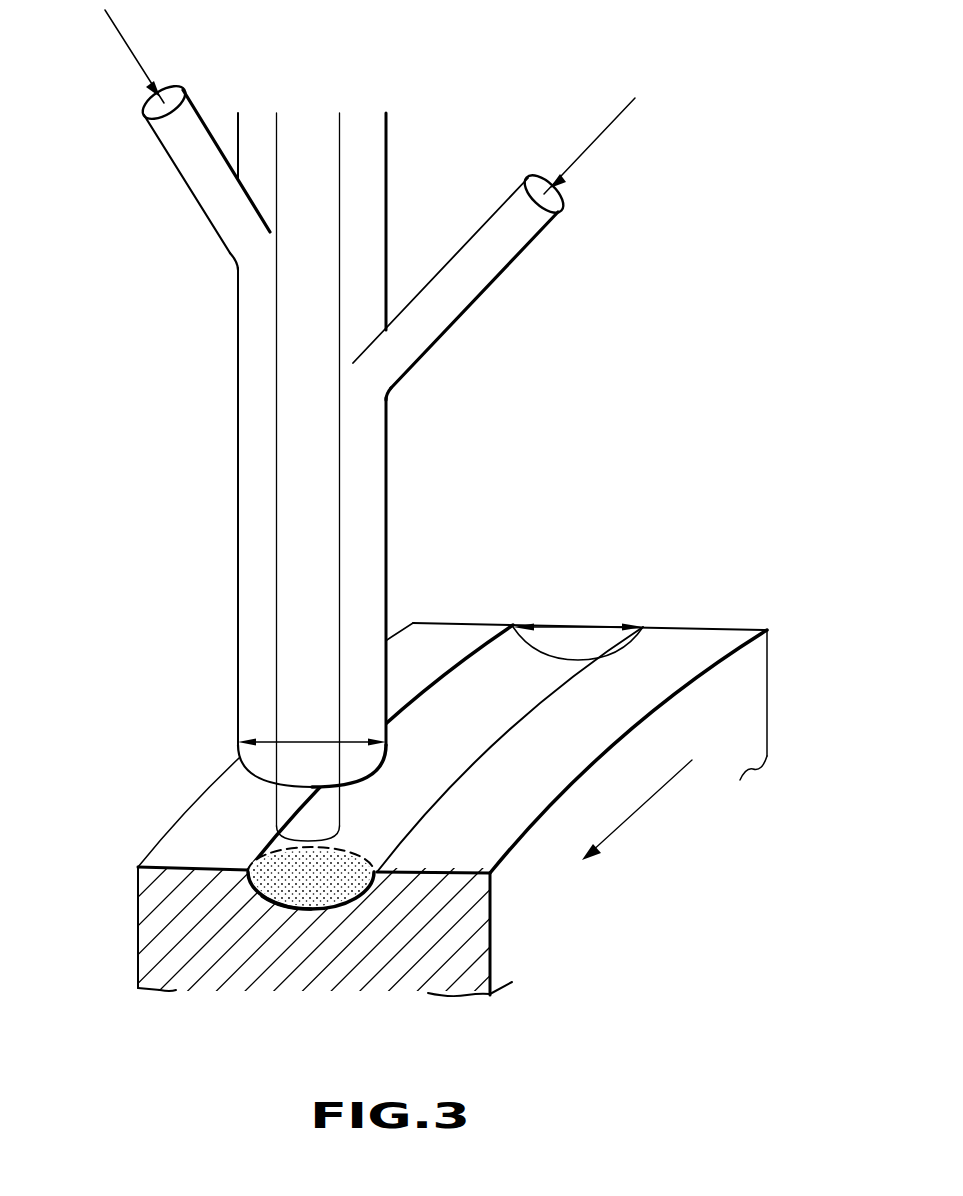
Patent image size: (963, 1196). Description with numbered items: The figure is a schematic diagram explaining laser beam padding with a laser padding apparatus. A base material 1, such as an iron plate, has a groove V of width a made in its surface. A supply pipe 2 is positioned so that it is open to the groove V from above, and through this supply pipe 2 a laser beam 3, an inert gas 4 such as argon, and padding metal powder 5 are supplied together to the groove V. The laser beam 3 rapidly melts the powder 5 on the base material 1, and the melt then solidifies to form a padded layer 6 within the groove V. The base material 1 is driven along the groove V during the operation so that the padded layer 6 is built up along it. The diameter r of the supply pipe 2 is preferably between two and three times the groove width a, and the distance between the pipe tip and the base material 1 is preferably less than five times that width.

The base material 1 is at (178, 820).
The supply pipe 2 is at (238, 520).
The laser beam 3 is at (342, 538).
The inert gas 4 is at (125, 50).
The padding metal powder 5 is at (597, 140).
The padded layer 6 is at (348, 890).
The groove V is at (288, 910).